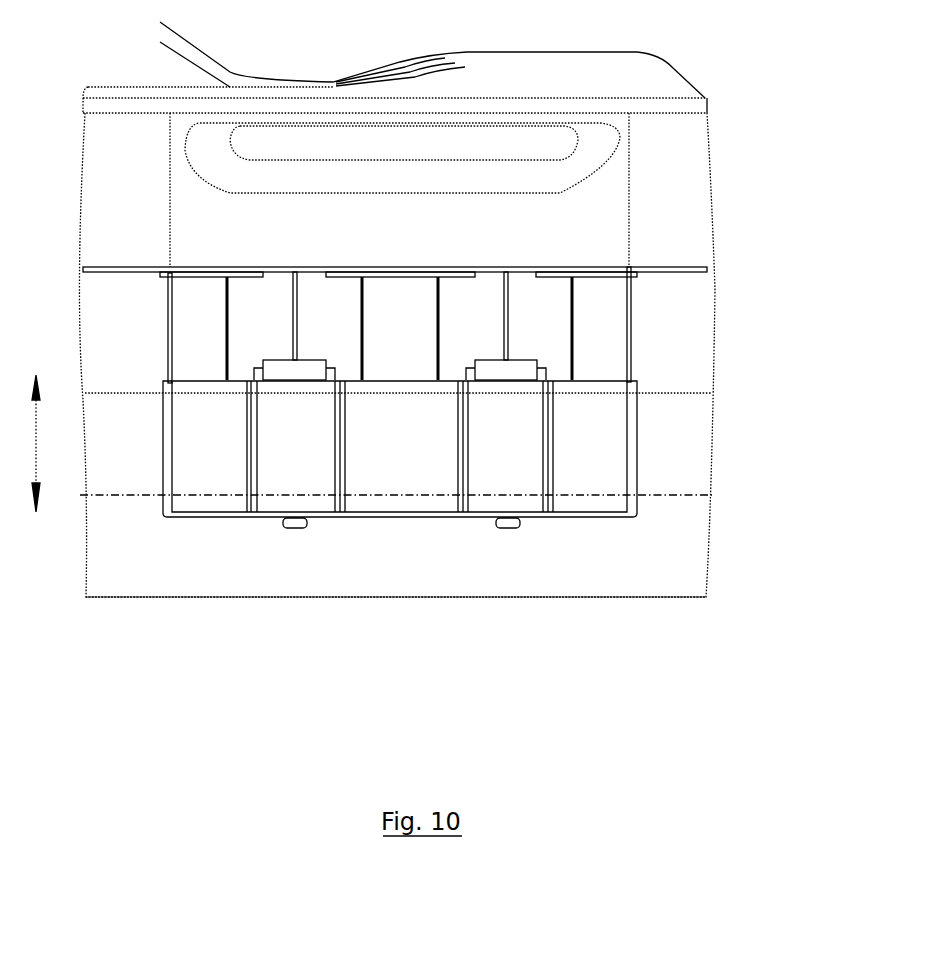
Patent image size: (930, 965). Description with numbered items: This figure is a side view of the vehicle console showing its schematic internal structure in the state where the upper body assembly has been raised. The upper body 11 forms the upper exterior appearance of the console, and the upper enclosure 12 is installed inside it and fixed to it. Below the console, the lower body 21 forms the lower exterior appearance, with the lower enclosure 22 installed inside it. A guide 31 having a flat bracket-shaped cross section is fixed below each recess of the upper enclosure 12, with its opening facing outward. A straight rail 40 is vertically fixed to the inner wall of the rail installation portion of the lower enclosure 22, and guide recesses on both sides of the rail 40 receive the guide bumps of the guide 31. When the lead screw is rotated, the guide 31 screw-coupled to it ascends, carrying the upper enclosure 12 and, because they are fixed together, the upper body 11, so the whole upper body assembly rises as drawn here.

The upper body 11 is at (693, 200).
The upper enclosure 12 is at (598, 315).
The lower body 21 is at (687, 516).
The lower enclosure 22 is at (598, 438).
The guide 31 is at (547, 373).
The rail 40 is at (513, 370).